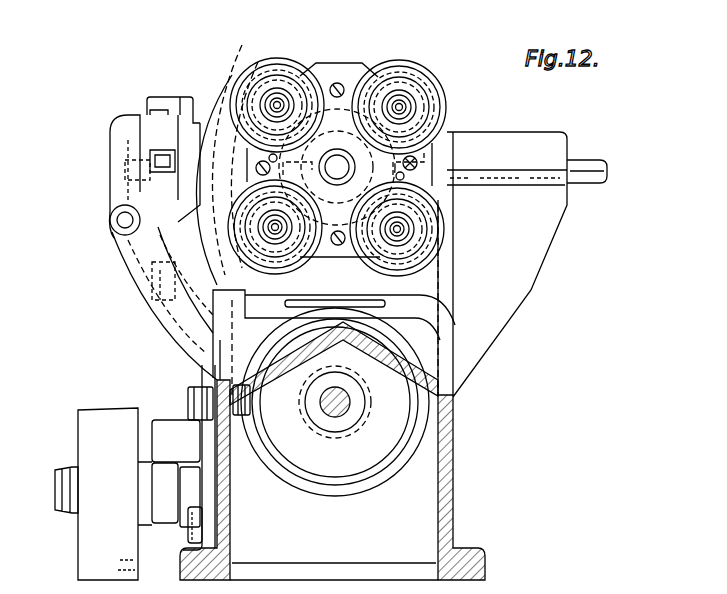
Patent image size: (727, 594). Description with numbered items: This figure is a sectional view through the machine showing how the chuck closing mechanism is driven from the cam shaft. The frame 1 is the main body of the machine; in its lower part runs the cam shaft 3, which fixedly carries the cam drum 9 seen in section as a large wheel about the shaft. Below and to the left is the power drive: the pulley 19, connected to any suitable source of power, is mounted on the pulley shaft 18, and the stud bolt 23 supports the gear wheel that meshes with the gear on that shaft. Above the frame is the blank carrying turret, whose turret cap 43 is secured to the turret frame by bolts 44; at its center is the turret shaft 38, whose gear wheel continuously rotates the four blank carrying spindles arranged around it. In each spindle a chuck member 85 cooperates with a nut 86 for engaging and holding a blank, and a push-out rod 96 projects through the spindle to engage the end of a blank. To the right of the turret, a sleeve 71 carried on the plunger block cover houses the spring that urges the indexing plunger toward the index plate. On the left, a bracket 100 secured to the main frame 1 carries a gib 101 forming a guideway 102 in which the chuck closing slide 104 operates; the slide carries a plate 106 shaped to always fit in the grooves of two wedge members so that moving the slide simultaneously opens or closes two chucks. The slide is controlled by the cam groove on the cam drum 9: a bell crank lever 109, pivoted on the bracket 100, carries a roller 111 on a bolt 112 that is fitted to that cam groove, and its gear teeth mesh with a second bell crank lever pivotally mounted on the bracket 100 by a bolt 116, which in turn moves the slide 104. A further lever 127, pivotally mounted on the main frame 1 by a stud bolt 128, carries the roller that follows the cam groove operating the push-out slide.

The frame 1 is at (450, 492).
The cam shaft 3 is at (347, 404).
The cam drum 9 is at (366, 478).
The pulley shaft 18 is at (55, 492).
The pulley 19 is at (97, 408).
The stud bolt 23 is at (152, 440).
The shaft 38 is at (337, 179).
The turret cap 43 is at (284, 60).
The bolts 44 is at (338, 82).
The sleeve 71 is at (581, 160).
The chuck member 85 is at (412, 107).
The nut 86 is at (415, 73).
The push-out rod 96 is at (385, 95).
The bracket 100 is at (110, 184).
The gib 101 is at (150, 97).
The guideway 102 is at (192, 97).
The chuck closing slide 104 is at (222, 92).
The plate 106 is at (243, 152).
The bell crank lever 109 is at (170, 338).
The roller 111 is at (242, 418).
The bolt 112 is at (188, 398).
The bolt 116 is at (150, 280).
The lever 127 is at (208, 477).
The stud bolt 128 is at (190, 527).